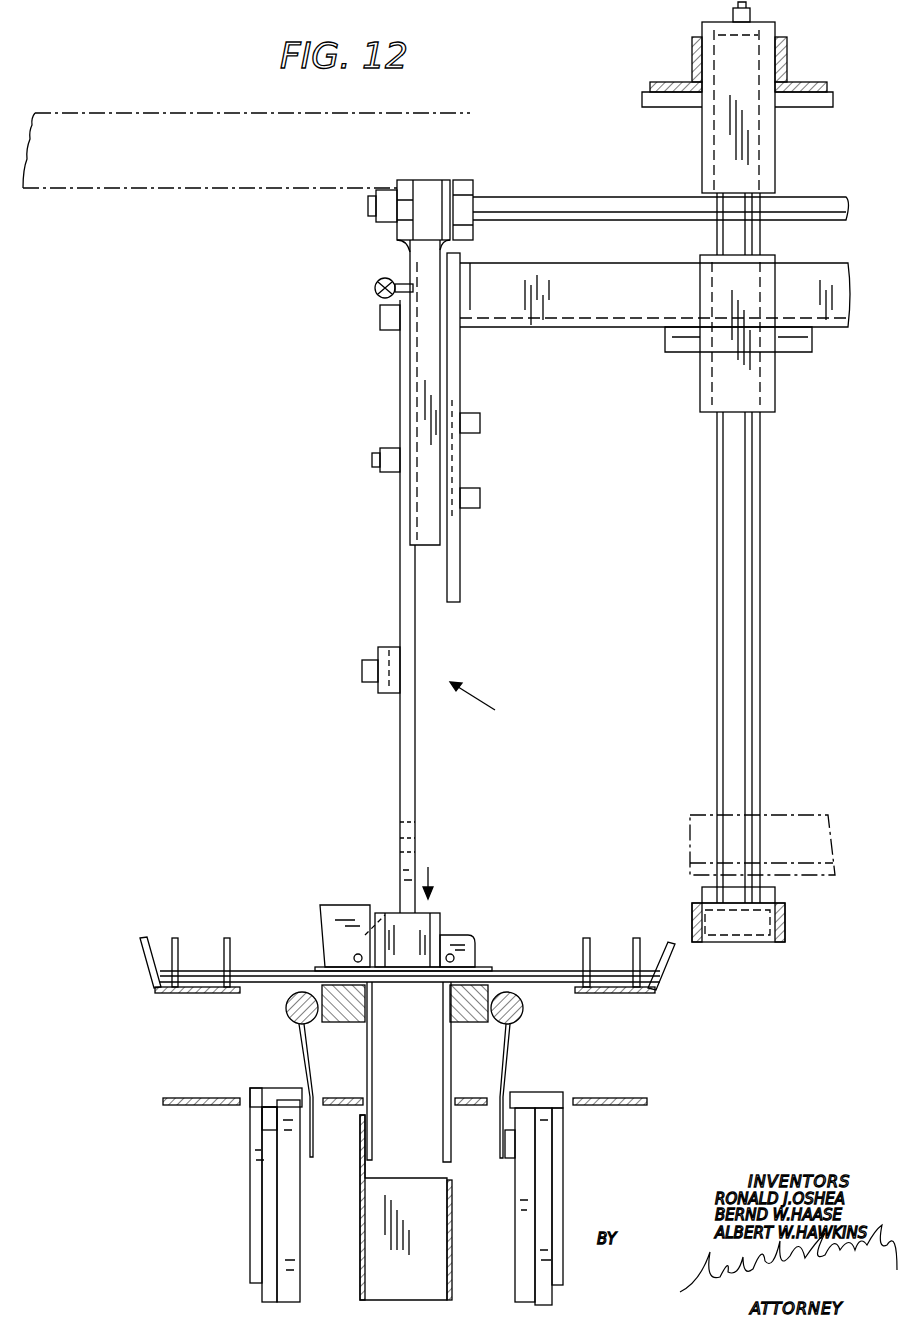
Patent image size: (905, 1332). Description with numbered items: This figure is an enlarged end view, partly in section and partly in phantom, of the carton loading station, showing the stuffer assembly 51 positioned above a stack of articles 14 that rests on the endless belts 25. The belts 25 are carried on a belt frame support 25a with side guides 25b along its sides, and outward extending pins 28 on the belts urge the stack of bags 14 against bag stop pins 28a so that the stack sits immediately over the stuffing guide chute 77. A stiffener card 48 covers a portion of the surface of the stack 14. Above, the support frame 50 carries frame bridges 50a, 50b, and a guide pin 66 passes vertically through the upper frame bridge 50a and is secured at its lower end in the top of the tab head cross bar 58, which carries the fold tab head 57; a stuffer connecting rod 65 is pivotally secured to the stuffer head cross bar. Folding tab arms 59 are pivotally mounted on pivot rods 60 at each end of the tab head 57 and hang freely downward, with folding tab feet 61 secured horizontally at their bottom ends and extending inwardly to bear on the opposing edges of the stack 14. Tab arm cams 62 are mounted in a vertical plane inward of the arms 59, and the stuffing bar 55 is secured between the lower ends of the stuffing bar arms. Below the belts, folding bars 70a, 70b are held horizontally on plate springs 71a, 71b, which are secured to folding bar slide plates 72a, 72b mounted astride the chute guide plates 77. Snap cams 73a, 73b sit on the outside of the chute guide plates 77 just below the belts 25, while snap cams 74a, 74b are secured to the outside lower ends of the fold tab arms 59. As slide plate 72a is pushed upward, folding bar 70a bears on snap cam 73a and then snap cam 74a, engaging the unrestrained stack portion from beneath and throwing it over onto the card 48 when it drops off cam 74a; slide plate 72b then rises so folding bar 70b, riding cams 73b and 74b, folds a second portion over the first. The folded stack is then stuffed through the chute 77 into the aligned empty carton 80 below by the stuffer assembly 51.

The stack of articles 14 is at (553, 973).
The endless belts 25 is at (213, 1098).
The belt frame support 25a is at (657, 991).
The side guides 25b is at (146, 940).
The pins 28 is at (638, 947).
The bag stop pins 28a is at (227, 945).
The stiffener card 48 is at (489, 969).
The support frame 50 is at (355, 112).
The frame bridge 50a is at (786, 62).
The frame bridge 50b is at (792, 816).
The stuffer assembly 51 is at (490, 706).
The stuffing bar 55 is at (400, 839).
The fold tab head 57 is at (422, 255).
The tab head cross bar 58 is at (570, 318).
The folding tab arms 59 is at (400, 595).
The pivot rods 60 is at (612, 200).
The folding tab feet 61 is at (440, 918).
The tab arm cams 62 is at (462, 578).
The stuffer connecting rod 65 is at (761, 581).
The guide pin 66 is at (733, 10).
The folding bar 70a is at (523, 1003).
The folding bar 70b is at (294, 1004).
The plate spring 71a is at (510, 1066).
The plate spring 71b is at (300, 1052).
The folding bar slide plate 72a is at (560, 1181).
The folding bar slide plate 72b is at (265, 1229).
The snap cam 73a is at (466, 1022).
The snap cam 73b is at (350, 1022).
The snap cam 74a is at (474, 939).
The snap cam 74b is at (345, 910).
The chute guide plates 77 is at (372, 1063).
The empty carton 80 is at (440, 1259).